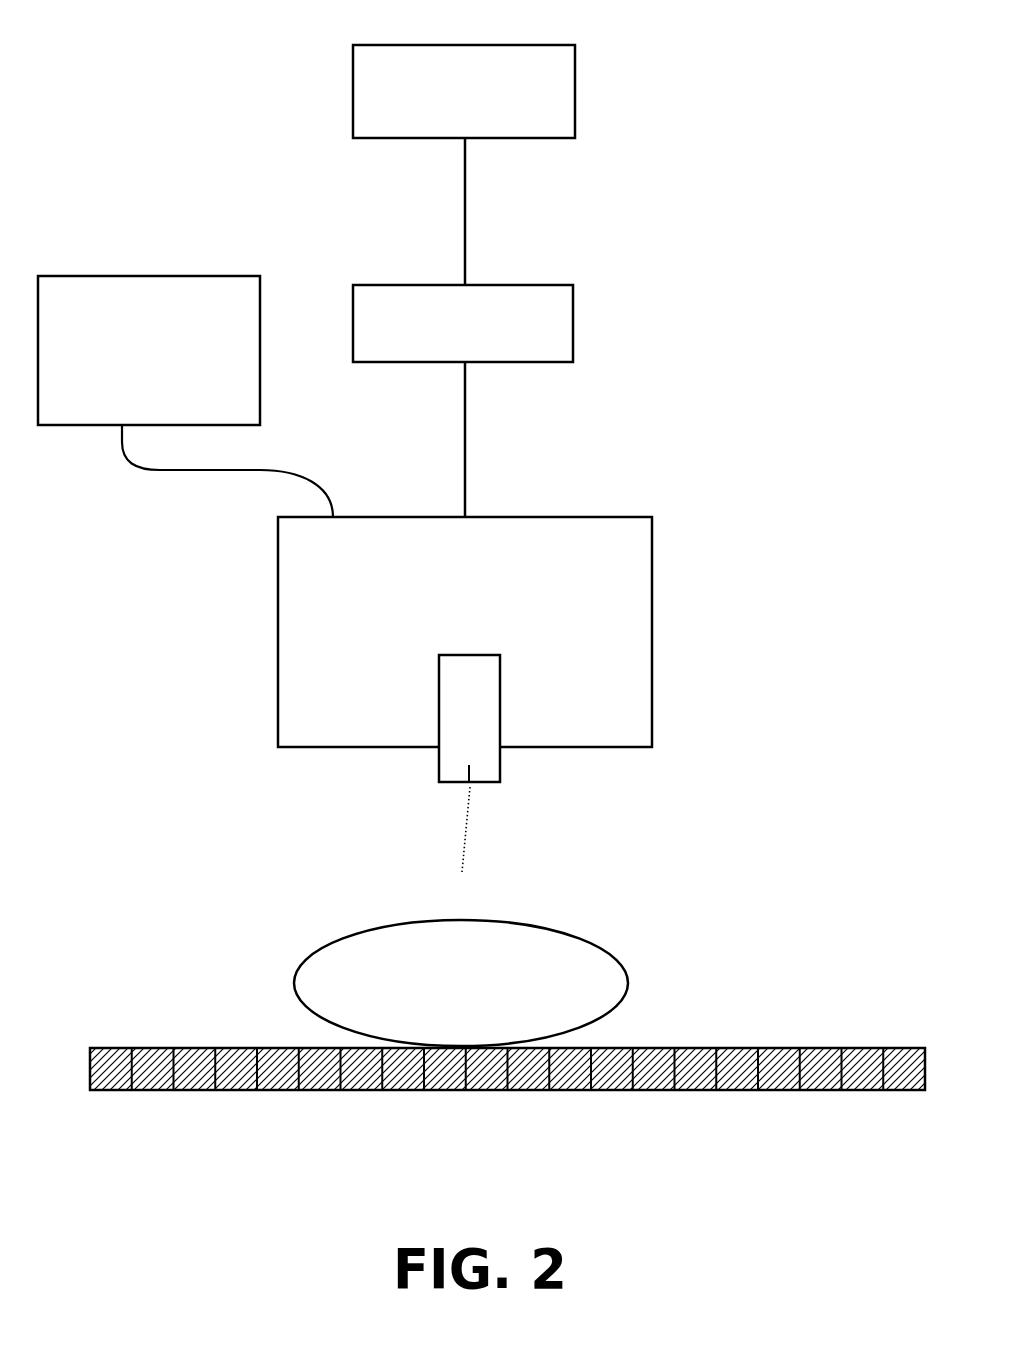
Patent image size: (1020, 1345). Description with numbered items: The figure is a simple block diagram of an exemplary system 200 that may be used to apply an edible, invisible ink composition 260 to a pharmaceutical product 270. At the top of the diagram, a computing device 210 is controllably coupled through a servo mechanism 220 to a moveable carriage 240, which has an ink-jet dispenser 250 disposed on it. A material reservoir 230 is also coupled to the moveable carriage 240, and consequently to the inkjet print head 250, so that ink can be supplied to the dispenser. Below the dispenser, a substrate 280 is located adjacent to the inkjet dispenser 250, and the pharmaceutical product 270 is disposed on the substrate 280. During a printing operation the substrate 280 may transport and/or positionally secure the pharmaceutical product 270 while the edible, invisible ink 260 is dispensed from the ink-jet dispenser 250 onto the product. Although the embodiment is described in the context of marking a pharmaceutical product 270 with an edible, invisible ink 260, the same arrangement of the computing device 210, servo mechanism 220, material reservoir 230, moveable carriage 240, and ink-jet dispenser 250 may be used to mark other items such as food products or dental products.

The system 200 is at (828, 220).
The computing device 210 is at (575, 92).
The servo mechanism 220 is at (573, 322).
The material reservoir 230 is at (127, 377).
The moveable carriage 240 is at (486, 571).
The ink-jet dispenser 250 is at (500, 690).
The edible, invisible ink composition 260 is at (472, 817).
The pharmaceutical product 270 is at (592, 942).
The substrate 280 is at (648, 1120).